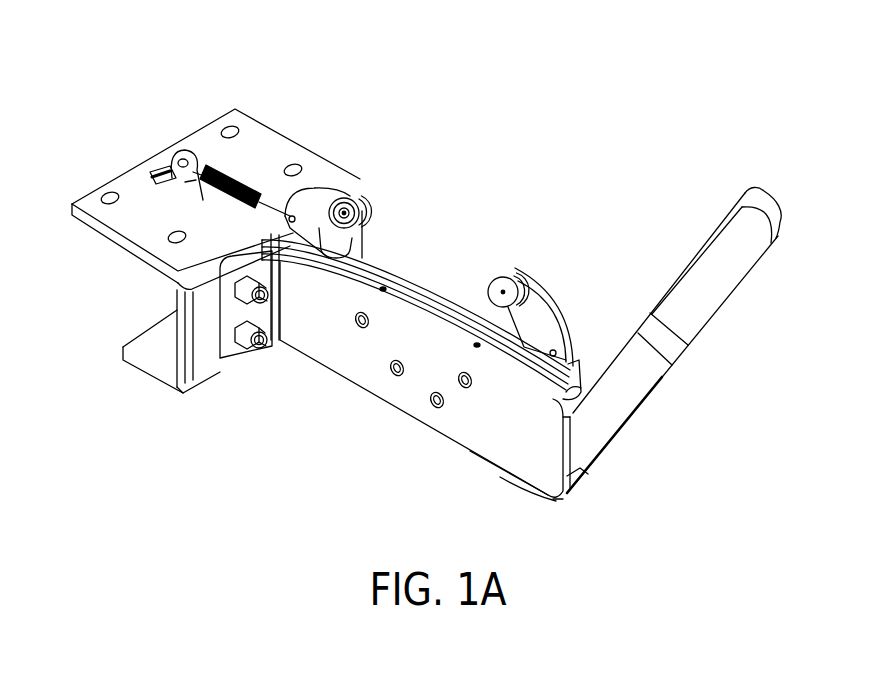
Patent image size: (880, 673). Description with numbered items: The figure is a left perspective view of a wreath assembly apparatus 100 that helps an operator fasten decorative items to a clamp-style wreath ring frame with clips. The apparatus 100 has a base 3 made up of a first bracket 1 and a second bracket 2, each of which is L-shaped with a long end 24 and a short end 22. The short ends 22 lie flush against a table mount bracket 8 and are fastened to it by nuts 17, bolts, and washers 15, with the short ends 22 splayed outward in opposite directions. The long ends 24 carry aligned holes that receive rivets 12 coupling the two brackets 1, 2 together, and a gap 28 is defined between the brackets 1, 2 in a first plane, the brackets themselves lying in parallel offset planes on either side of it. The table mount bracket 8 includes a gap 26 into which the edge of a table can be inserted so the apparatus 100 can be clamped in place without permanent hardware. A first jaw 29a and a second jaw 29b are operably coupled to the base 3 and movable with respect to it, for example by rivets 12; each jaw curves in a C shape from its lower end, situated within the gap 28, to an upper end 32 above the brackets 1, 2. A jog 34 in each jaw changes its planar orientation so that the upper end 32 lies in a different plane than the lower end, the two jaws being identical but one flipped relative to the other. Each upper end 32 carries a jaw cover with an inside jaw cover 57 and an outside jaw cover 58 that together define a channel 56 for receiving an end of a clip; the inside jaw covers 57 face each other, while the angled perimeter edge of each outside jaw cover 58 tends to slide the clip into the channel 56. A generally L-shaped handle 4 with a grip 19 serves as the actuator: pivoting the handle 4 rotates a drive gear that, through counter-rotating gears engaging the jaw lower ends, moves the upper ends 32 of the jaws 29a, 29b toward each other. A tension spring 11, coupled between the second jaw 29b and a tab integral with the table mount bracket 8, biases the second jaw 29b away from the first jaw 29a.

The wreath assembly apparatus 100 is at (688, 72).
The first bracket 1 is at (428, 292).
The second bracket 2 is at (555, 490).
The base 3 is at (537, 170).
The handle 4 is at (630, 392).
The table mount bracket 8 is at (115, 220).
The spring 11 is at (238, 173).
The rivets 12 is at (360, 330).
The washers 15 is at (250, 272).
The nuts 17 is at (237, 280).
The grip 19 is at (725, 284).
The short end 22 is at (237, 313).
The long end 24 is at (490, 450).
The gap 26 is at (112, 299).
The gap 28 is at (413, 295).
The first jaw 29a is at (547, 323).
The second jaw 29b is at (316, 194).
The upper end 32 is at (380, 190).
The jog 34 is at (568, 370).
The channel 56 is at (385, 218).
The inside jaw cover 57 is at (370, 207).
The outside jaw cover 58 is at (360, 198).